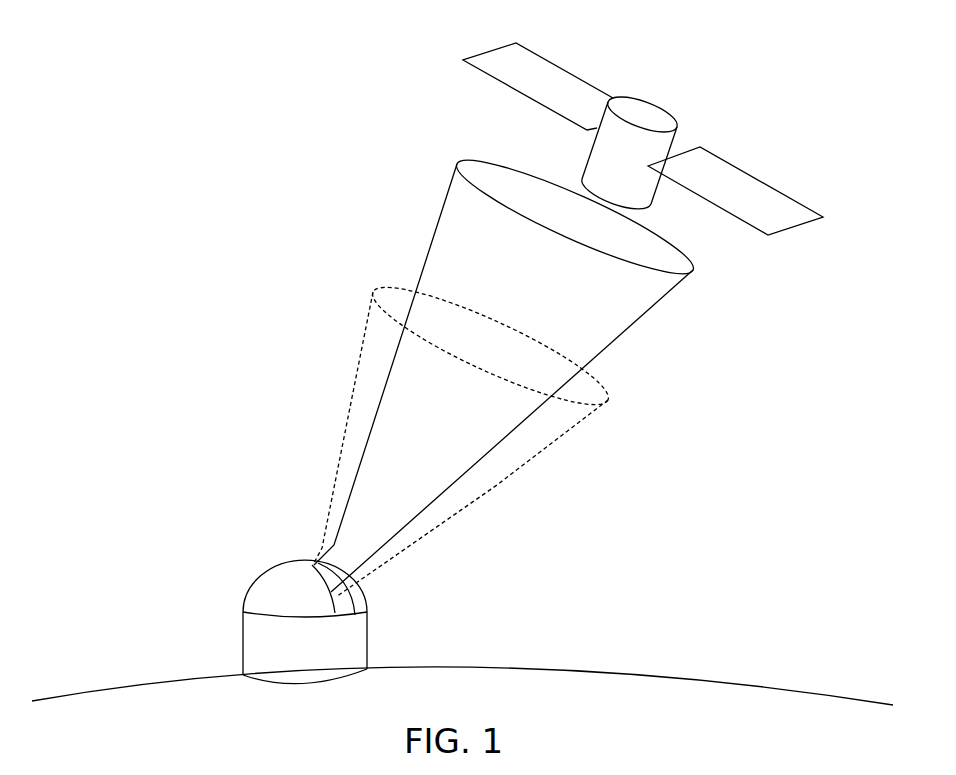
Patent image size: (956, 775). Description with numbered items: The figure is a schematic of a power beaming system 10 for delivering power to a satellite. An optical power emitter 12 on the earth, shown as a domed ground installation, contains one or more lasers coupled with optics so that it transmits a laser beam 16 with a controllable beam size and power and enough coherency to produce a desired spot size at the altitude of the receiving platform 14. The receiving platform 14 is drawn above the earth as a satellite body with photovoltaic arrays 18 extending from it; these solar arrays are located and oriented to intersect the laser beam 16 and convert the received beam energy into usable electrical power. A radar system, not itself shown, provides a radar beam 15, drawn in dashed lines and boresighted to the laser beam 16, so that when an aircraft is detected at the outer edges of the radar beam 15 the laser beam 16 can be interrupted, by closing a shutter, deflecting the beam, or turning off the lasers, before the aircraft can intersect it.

The power beaming system 10 is at (259, 265).
The optical power emitter 12 is at (252, 585).
The receiving platform 14 is at (708, 86).
The radar beam 15 is at (497, 485).
The laser beam 16 is at (422, 268).
The photovoltaic arrays 18 is at (788, 196).